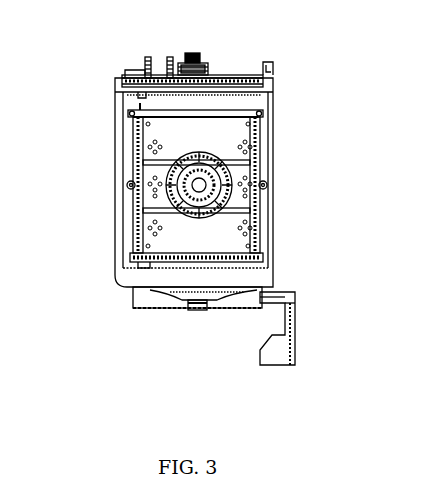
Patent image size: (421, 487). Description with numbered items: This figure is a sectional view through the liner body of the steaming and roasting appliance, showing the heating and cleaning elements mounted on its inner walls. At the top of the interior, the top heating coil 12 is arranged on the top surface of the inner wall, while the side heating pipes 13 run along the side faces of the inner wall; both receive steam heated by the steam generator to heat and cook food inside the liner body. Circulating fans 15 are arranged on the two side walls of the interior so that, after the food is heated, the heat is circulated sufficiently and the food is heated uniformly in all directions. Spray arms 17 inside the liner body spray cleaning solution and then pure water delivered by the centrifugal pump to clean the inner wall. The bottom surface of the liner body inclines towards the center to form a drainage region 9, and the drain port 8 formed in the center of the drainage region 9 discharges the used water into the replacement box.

The drain port 8 is at (197, 312).
The drainage region 9 is at (235, 292).
The top heating coil 12 is at (118, 93).
The side heating pipes 13 is at (255, 161).
The circulating fans 15 is at (133, 197).
The spray arms 17 is at (211, 76).